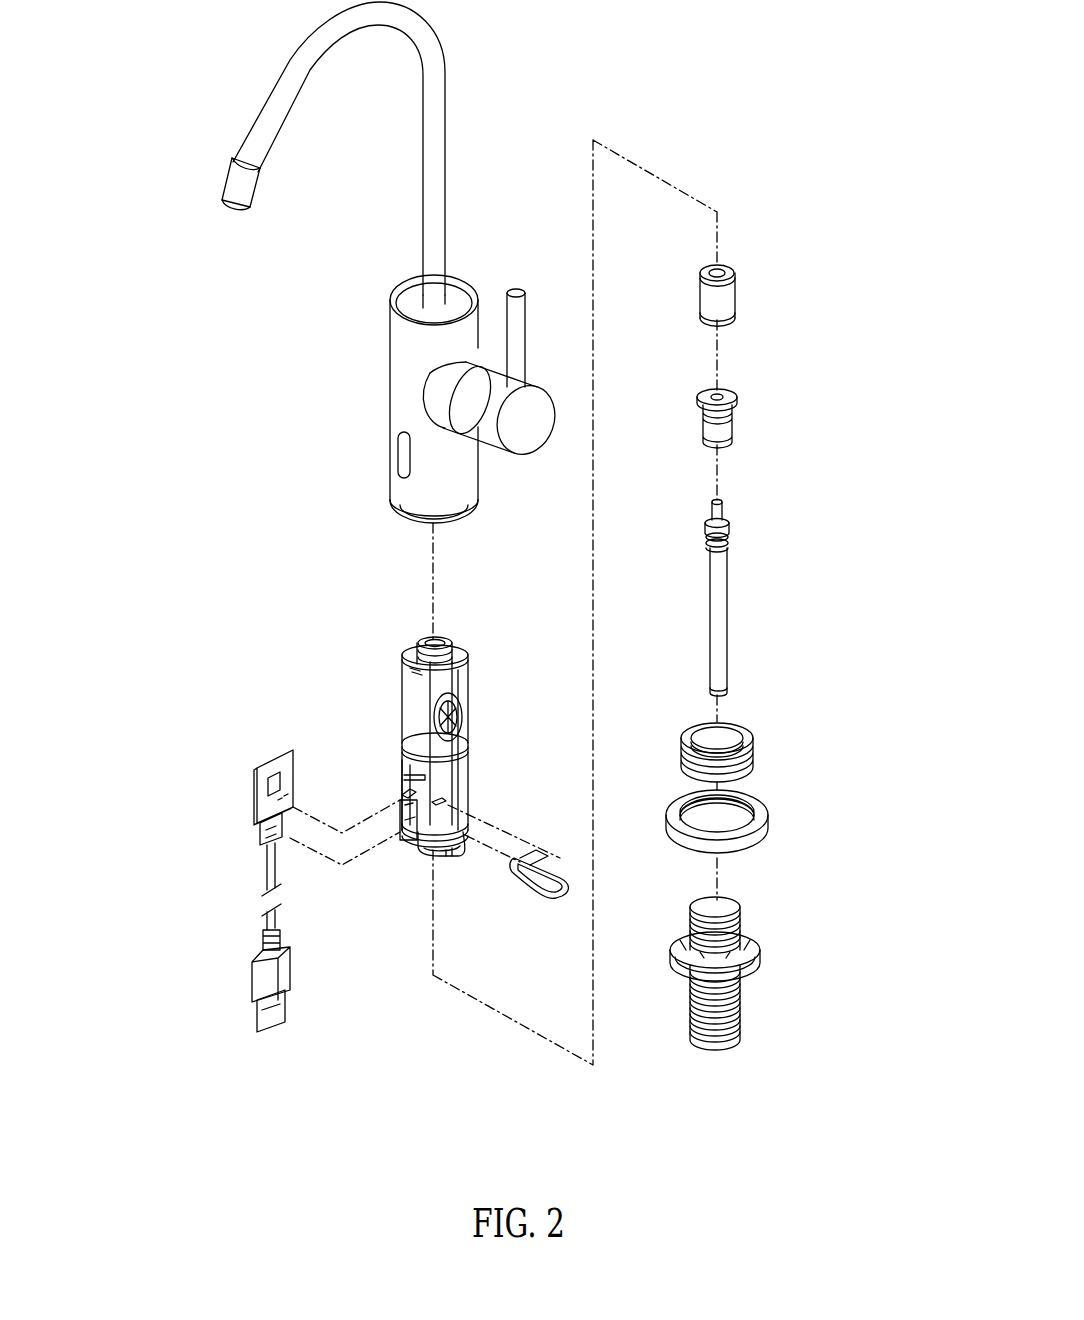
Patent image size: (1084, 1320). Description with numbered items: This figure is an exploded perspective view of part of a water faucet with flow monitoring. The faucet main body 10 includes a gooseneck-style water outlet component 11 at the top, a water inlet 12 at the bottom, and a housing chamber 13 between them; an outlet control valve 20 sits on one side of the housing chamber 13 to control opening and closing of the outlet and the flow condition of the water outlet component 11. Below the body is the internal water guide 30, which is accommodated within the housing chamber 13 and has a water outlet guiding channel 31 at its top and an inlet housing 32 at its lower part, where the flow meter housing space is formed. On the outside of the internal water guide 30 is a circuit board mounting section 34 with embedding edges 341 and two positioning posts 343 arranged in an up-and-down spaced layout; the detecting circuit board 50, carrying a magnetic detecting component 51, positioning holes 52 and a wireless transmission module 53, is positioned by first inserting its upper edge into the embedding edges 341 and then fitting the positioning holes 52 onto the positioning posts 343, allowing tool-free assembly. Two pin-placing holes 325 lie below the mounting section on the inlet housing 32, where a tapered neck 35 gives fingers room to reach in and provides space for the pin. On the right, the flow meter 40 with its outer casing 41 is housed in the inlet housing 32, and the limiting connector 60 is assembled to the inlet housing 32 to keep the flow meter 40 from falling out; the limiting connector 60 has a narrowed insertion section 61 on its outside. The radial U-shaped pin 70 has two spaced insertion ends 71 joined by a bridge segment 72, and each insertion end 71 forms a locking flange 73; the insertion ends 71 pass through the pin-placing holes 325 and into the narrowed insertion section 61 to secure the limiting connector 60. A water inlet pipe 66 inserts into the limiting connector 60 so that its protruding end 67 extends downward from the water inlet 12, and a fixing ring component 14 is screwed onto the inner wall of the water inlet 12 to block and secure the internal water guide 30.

The faucet main body 10 is at (372, 392).
The water outlet component 11 is at (327, 50).
The water inlet 12 is at (755, 852).
The housing chamber 13 is at (423, 530).
The fixing ring component 14 is at (755, 732).
The outlet control valve 20 is at (534, 376).
The internal water guide 30 is at (391, 744).
The water outlet guiding channel 31 is at (447, 640).
The inlet housing 32 is at (427, 853).
The pin-placing holes 325 is at (453, 852).
The circuit board mounting section 34 is at (410, 777).
The embedding edges 341 is at (412, 773).
The positioning posts 343 is at (398, 790).
The tapered neck 35 is at (467, 827).
The flow meter 40 is at (758, 268).
The outer casing 41 is at (736, 296).
The detecting circuit board 50 is at (228, 868).
The magnetic detecting component 51 is at (258, 806).
The positioning holes 52 is at (258, 818).
The wireless transmission module 53 is at (270, 752).
The limiting connector 60 is at (763, 396).
The narrowed insertion section 61 is at (734, 417).
The water inlet pipe 66 is at (728, 617).
The protruding end 67 is at (710, 697).
The radial U-shaped pin 70 is at (554, 883).
The insertion ends 71 is at (513, 872).
The bridge segment 72 is at (565, 895).
The locking flange 73 is at (535, 858).